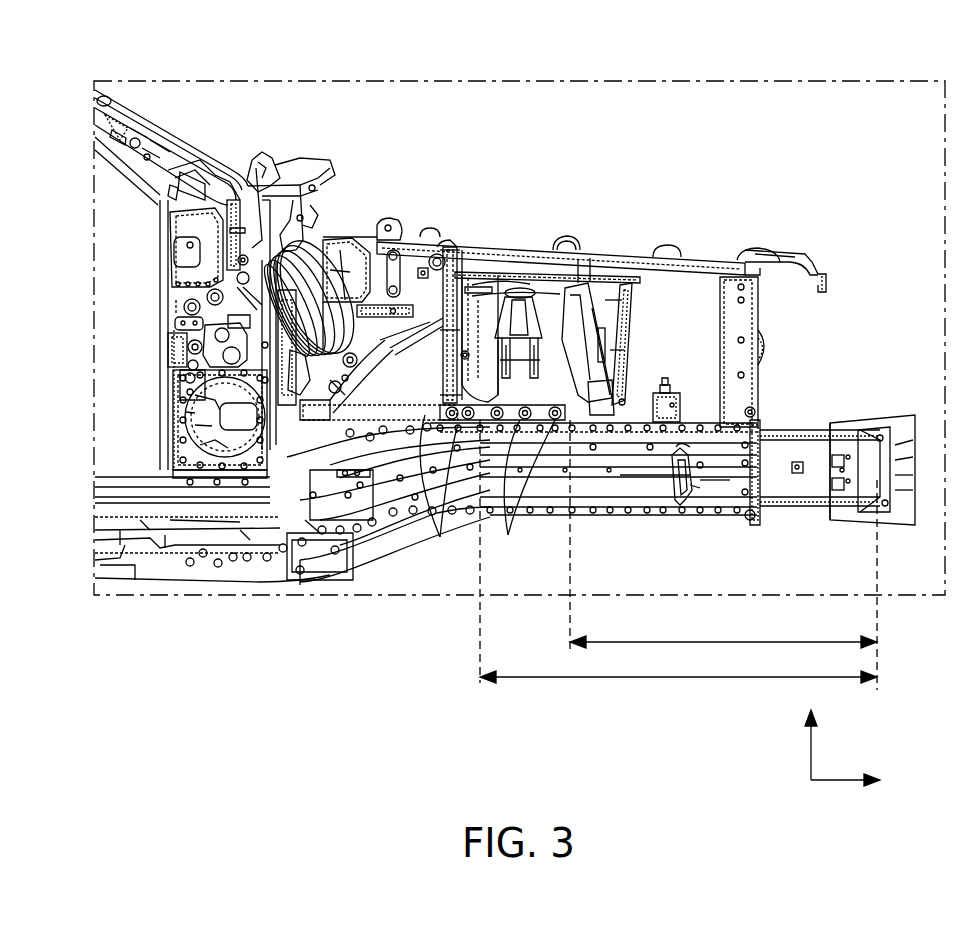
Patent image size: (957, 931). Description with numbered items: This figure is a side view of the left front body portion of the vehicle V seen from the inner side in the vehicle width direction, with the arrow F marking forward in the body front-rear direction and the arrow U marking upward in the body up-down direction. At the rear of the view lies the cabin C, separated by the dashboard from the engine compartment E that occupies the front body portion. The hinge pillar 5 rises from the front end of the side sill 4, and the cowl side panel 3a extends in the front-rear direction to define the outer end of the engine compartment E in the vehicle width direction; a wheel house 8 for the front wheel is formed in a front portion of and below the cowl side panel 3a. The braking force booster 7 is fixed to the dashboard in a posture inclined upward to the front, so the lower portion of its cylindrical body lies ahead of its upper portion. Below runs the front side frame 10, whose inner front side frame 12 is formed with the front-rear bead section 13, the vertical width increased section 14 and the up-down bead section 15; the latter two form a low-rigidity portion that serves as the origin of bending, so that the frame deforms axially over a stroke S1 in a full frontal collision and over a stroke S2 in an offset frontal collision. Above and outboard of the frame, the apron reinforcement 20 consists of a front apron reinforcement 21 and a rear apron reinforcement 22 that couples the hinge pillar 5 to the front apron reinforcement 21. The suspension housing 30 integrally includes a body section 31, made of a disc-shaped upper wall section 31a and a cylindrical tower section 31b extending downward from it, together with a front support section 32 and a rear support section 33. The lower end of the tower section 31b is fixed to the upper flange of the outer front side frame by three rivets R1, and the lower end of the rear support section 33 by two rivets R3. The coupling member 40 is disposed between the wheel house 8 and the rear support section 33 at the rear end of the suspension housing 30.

The vehicle V is at (198, 102).
The cabin C is at (122, 276).
The engine compartment E is at (691, 325).
The cowl side panel 3a is at (375, 245).
The side sill 4 is at (150, 560).
The hinge pillar 5 is at (185, 366).
The braking force booster 7 is at (303, 245).
The wheel house 8 is at (386, 420).
The front side frame 10 is at (560, 527).
The inner front side frame 12 is at (718, 447).
The front-rear bead section 13 is at (647, 470).
The vertical width increased section 14 is at (680, 497).
The up-down bead section 15 is at (703, 478).
The apron reinforcement 20 is at (448, 238).
The front apron reinforcement 21 is at (545, 348).
The rear apron reinforcement 22 is at (413, 240).
The suspension housing 30 is at (582, 268).
The body section 31 is at (505, 270).
The upper wall section 31a is at (509, 288).
The tower section 31b is at (640, 253).
The front support section 32 is at (593, 383).
The rear support section 33 is at (456, 353).
The coupling member 40 is at (430, 420).
The rivets R1 is at (525, 496).
The rivets R3 is at (439, 496).
The stroke S1 is at (723, 630).
The stroke S2 is at (678, 689).
The arrow U direction U is at (811, 752).
The arrow F direction F is at (833, 780).